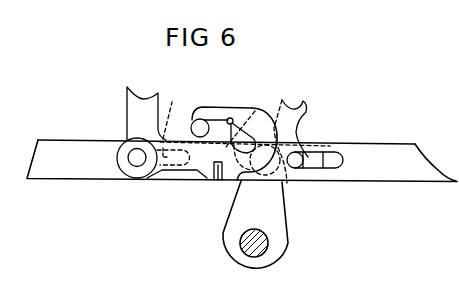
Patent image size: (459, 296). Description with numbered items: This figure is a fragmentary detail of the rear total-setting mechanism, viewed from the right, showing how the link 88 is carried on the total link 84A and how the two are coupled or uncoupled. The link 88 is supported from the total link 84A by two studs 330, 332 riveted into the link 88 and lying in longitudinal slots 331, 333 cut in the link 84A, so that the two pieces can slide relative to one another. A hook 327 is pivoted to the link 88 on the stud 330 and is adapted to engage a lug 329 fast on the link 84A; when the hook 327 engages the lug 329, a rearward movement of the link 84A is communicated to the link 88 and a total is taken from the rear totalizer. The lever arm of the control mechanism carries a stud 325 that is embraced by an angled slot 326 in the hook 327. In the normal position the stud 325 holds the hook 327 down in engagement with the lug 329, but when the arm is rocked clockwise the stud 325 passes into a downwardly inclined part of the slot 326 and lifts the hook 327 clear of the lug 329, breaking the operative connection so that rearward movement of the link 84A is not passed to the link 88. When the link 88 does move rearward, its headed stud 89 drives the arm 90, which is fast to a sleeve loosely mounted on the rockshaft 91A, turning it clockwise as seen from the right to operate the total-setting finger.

The total link 84A is at (105, 145).
The link 88 is at (135, 103).
The headed stud 89 is at (302, 104).
The arm 90 is at (231, 244).
The rockshaft 91A is at (268, 245).
The stud 325 is at (199, 124).
The angled slot 326 is at (229, 118).
The hook 327 is at (255, 111).
The lug 329 is at (224, 180).
The stud 330 is at (139, 164).
The longitudinal slot 331 is at (178, 114).
The stud 332 is at (297, 157).
The longitudinal slot 333 is at (325, 168).